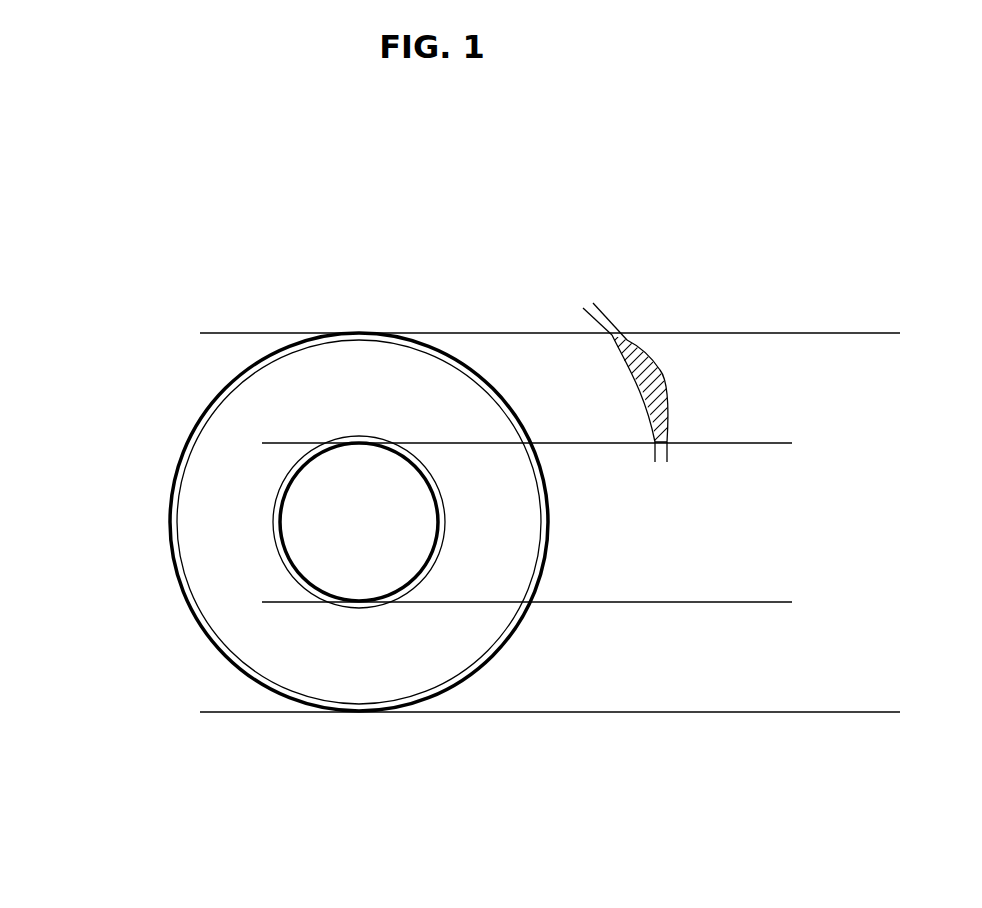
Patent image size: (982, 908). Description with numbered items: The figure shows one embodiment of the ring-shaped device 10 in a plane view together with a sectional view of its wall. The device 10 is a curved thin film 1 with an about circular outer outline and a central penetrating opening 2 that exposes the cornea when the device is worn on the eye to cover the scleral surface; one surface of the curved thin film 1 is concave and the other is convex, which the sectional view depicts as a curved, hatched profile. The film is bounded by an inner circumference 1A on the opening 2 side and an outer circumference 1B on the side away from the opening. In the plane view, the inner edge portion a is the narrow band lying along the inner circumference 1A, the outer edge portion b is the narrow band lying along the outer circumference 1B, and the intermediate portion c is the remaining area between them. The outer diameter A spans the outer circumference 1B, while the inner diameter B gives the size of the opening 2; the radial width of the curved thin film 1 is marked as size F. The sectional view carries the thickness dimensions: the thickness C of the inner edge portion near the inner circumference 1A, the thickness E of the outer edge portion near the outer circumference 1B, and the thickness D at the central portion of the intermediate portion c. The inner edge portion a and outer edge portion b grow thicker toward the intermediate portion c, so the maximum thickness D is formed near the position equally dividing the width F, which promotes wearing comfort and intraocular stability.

The ring-shaped device 10 is at (440, 288).
The curved thin film 1 is at (513, 572).
The opening 2 is at (393, 562).
The inner circumference 1A is at (290, 488).
The outer circumference 1B is at (347, 333).
The inner edge portion a is at (288, 565).
The outer edge portion b is at (307, 335).
The intermediate portion c is at (205, 477).
The outer diameter A is at (853, 333).
The inner diameter B is at (747, 443).
The inner edge portion thickness C is at (600, 452).
The central portion thickness D is at (592, 408).
The outer edge portion thickness E is at (648, 290).
The width of curved thin film F is at (360, 602).